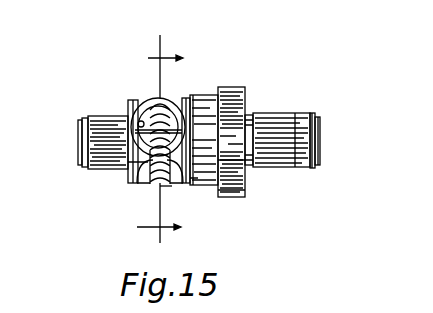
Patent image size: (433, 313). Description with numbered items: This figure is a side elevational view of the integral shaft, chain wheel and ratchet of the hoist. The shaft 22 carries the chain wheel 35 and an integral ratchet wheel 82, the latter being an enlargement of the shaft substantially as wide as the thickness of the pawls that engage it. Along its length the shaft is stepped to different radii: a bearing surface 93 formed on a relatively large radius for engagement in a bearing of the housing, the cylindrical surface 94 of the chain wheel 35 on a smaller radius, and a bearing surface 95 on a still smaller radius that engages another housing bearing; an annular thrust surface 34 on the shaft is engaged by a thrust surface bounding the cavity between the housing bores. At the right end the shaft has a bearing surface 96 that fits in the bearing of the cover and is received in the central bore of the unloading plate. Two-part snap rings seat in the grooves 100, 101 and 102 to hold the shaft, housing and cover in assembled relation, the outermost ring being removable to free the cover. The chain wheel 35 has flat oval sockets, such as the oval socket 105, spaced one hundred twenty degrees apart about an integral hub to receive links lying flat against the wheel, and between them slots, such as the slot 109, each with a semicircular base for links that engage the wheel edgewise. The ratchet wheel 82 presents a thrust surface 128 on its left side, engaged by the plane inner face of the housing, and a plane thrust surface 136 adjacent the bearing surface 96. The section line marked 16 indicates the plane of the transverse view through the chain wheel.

The section line 16- 16 is at (172, 139).
The shaft 22 is at (285, 113).
The annular thrust surface 34 is at (110, 113).
The chain wheel 35 is at (183, 155).
The ratchet wheel 82 is at (238, 83).
The bearing surface 93 is at (197, 96).
The cylindrical surface 94 is at (191, 100).
The bearing surface 95 is at (106, 118).
The bearing surface 96 is at (294, 112).
The groove 100 is at (88, 117).
The groove 101 is at (251, 116).
The groove 102 is at (314, 112).
The oval socket 105 is at (140, 124).
The slot 109 is at (163, 106).
The thrust surface 128 is at (168, 186).
The plane thrust surface 136 is at (248, 180).